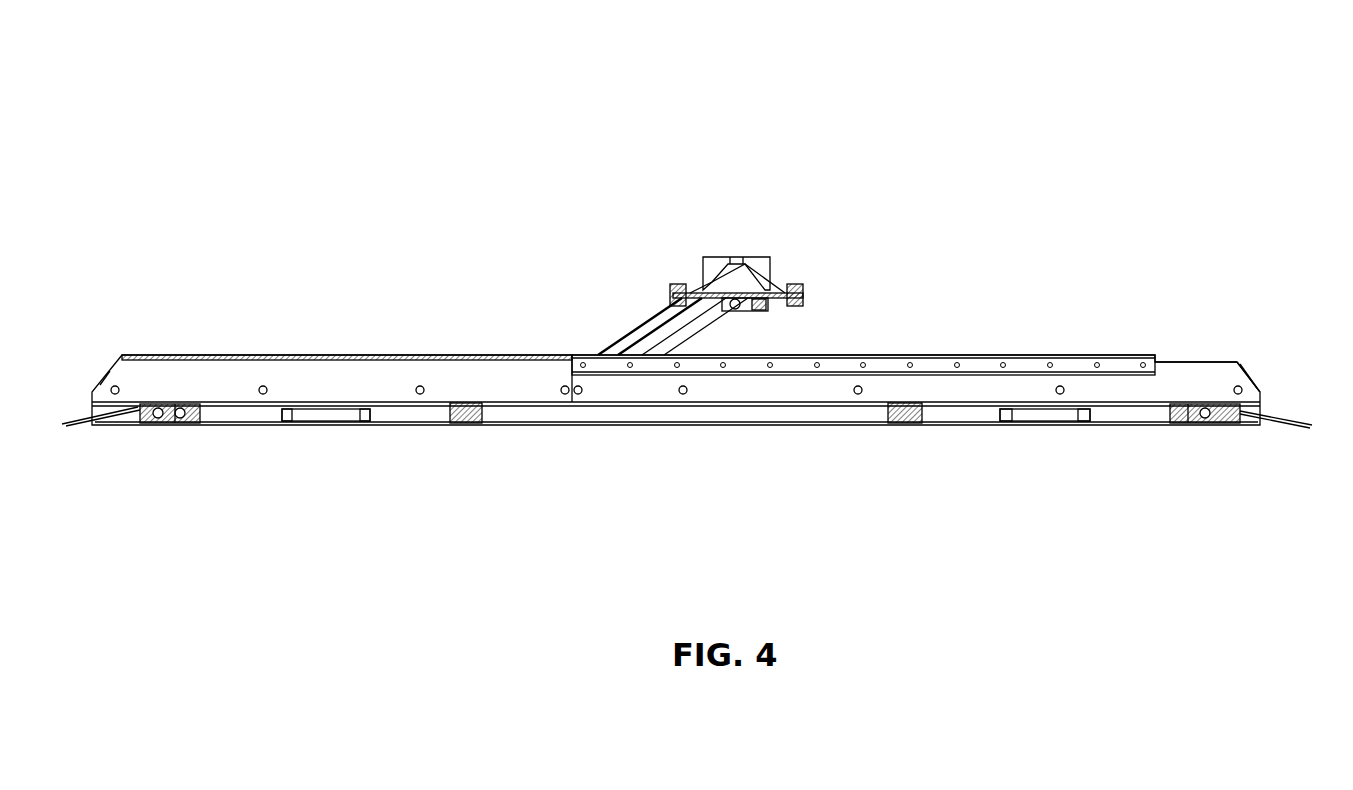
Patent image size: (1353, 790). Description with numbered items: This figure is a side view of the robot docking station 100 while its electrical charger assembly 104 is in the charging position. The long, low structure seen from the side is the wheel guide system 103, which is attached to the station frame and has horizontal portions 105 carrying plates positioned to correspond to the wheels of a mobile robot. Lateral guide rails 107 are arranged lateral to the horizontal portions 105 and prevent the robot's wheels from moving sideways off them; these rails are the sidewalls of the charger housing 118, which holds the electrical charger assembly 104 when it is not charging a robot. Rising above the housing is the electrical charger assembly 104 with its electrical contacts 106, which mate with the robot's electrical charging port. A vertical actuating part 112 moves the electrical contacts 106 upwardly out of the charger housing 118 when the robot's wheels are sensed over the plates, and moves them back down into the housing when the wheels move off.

The robot docking station 100 is at (243, 147).
The wheel guide system 103 is at (1278, 371).
The electrical charger assembly 104 is at (812, 208).
The horizontal portions 105 is at (518, 407).
The electrical contacts 106 is at (722, 257).
The lateral guide rails 107 is at (368, 391).
The vertical actuating part 112 is at (582, 320).
The charger housing 118 is at (432, 328).